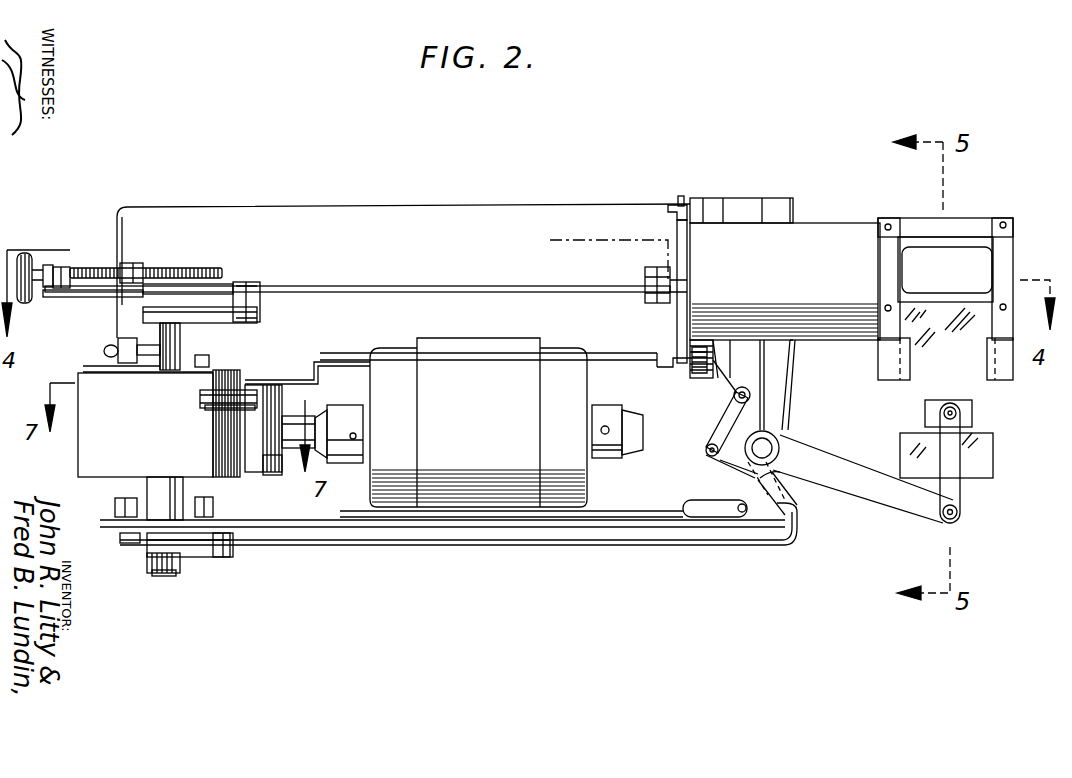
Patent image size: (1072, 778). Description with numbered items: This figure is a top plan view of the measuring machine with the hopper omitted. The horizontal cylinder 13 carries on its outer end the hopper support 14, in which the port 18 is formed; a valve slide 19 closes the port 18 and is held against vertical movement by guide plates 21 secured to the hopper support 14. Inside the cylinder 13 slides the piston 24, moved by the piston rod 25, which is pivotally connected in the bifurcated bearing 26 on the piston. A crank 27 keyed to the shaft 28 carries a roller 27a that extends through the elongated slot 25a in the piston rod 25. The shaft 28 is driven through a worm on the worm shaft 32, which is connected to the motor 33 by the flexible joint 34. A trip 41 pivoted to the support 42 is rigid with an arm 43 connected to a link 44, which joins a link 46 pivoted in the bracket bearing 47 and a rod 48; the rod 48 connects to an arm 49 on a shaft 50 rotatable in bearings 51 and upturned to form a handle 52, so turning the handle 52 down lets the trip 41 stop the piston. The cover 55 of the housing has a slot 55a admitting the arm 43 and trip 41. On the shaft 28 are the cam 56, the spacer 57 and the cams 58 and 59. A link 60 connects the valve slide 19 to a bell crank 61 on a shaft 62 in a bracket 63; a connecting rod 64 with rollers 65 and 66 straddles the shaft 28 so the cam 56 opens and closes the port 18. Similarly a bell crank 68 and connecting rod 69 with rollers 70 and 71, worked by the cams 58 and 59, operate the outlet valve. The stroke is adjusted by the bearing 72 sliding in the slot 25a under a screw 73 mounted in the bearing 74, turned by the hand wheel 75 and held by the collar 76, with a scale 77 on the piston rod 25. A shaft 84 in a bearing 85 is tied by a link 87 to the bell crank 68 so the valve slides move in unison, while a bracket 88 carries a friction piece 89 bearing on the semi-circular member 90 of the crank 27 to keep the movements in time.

The cylinder 13 is at (813, 250).
The hopper support 14 is at (917, 217).
The port 18 is at (947, 252).
The valve slide 19 is at (982, 467).
The guide plates 21 is at (893, 370).
The piston 24 is at (967, 262).
The piston rod 25 is at (422, 287).
The elongated slot 25a is at (197, 270).
The bifurcated bearing 26 is at (642, 273).
The crank 27 is at (183, 313).
The roller 27a is at (257, 303).
The shaft 28 is at (163, 577).
The worm shaft 32 is at (345, 465).
The motor 33 is at (468, 483).
The flexible joint 34 is at (273, 472).
The trip 41 is at (200, 400).
The support 42 is at (203, 360).
The arm 43 is at (207, 383).
The link 44 is at (220, 407).
The link 46 is at (277, 387).
The bracket bearing 47 is at (290, 407).
The rod 48 is at (340, 360).
The arm 49 is at (670, 363).
The shaft 50 is at (680, 315).
The bearings 51 is at (668, 212).
The handle 52 is at (683, 200).
The cover 55 is at (107, 438).
The slot 55a is at (253, 360).
The cam 56 is at (163, 503).
The spacer 57 is at (130, 522).
The cam 58 is at (197, 557).
The cam 59 is at (192, 560).
The link 60 is at (957, 490).
The bell crank 61 is at (865, 487).
The shaft 62 is at (780, 497).
The bracket 63 is at (778, 397).
The connecting rod 64 is at (627, 513).
The roller 65 is at (213, 505).
The roller 66 is at (115, 507).
The bell crank 68 is at (837, 447).
The connecting rod 69 is at (593, 527).
The roller 70 is at (230, 553).
The roller 71 is at (122, 545).
The bearing 72 is at (135, 267).
The screw 73 is at (188, 290).
The bearing 74 is at (50, 263).
The hand wheel 75 is at (25, 257).
The collar 76 is at (57, 270).
The scale 77 is at (107, 290).
The shaft 84 is at (737, 397).
The bearing 85 is at (727, 430).
The link 87 is at (735, 462).
The bracket 88 is at (130, 340).
The friction piece 89 is at (137, 338).
The semi-circular member 90 is at (143, 347).